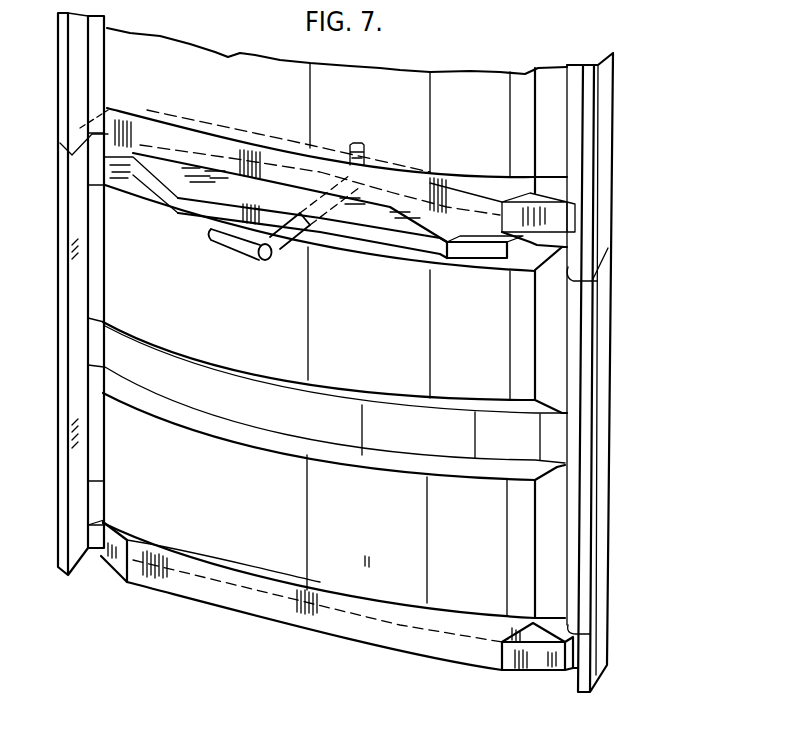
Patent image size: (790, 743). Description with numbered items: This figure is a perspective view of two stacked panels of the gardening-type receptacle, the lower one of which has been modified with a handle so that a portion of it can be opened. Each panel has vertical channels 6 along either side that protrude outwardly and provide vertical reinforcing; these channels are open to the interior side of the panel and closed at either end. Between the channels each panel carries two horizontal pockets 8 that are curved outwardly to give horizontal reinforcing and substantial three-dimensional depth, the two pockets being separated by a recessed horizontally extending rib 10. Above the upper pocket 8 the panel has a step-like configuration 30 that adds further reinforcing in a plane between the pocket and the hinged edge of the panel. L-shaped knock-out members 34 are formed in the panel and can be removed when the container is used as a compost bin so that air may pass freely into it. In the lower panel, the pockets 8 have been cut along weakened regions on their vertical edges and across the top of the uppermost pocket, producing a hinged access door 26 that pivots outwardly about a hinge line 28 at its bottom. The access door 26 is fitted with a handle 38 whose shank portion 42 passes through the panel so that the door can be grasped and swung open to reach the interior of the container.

The vertical channel 6 is at (62, 458).
The horizontal pocket 8 is at (522, 338).
The recessed horizontally extending rib 10 is at (548, 440).
The hinged access door 26 is at (232, 527).
The hinge line 28 is at (441, 630).
The step-like configuration 30 is at (206, 212).
The L-shaped knock-out member 34 is at (78, 128).
The handle 38 is at (271, 259).
The shank portion 42 is at (308, 240).